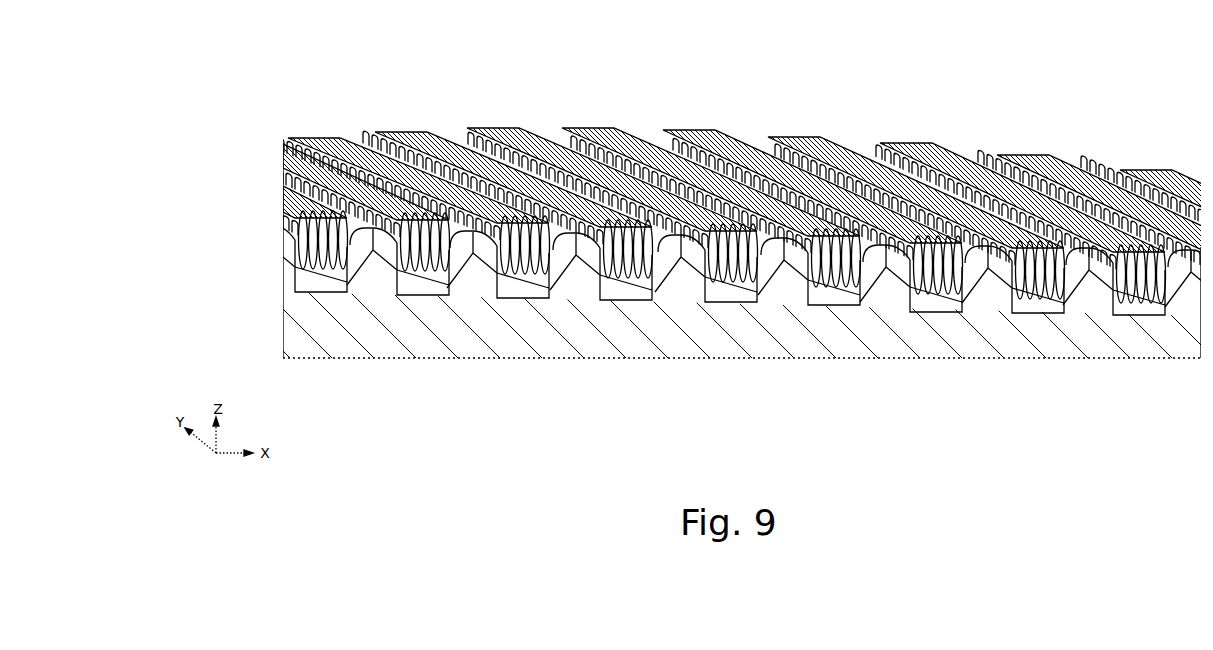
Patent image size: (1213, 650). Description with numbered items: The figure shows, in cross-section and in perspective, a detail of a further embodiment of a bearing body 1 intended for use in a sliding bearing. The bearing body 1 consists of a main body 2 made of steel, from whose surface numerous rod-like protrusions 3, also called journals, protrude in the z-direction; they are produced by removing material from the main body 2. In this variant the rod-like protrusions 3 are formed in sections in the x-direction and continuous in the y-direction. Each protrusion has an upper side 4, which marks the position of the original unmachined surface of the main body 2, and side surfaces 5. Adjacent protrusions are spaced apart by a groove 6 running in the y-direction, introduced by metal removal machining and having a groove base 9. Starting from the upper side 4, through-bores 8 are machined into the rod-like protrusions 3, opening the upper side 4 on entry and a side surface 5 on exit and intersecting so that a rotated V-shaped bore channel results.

The bearing body 1 is at (635, 211).
The main body 2 is at (573, 292).
The rod-like protrusion 3 is at (594, 231).
The upper side 4 is at (590, 125).
The side surface 5 is at (713, 135).
The groove 6 is at (916, 237).
The through-bore 8 is at (666, 263).
The groove base 9 is at (1025, 315).